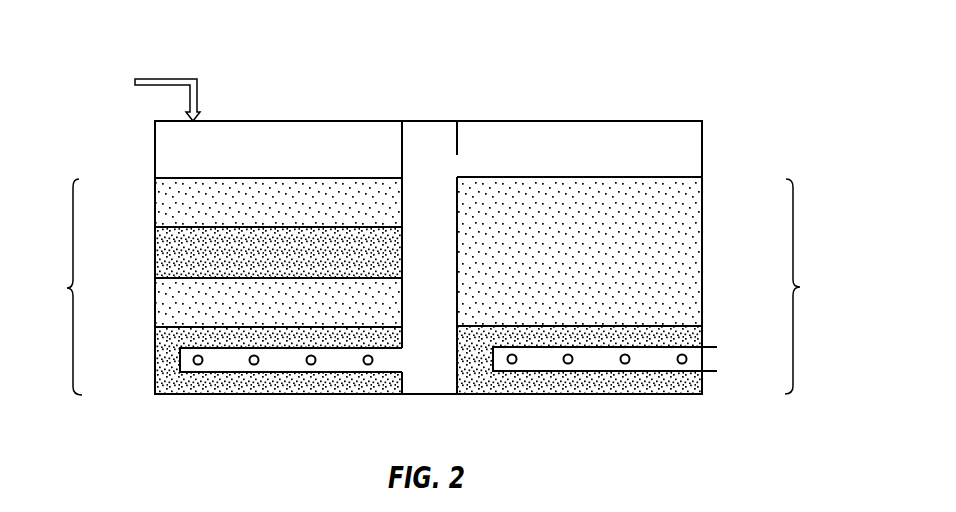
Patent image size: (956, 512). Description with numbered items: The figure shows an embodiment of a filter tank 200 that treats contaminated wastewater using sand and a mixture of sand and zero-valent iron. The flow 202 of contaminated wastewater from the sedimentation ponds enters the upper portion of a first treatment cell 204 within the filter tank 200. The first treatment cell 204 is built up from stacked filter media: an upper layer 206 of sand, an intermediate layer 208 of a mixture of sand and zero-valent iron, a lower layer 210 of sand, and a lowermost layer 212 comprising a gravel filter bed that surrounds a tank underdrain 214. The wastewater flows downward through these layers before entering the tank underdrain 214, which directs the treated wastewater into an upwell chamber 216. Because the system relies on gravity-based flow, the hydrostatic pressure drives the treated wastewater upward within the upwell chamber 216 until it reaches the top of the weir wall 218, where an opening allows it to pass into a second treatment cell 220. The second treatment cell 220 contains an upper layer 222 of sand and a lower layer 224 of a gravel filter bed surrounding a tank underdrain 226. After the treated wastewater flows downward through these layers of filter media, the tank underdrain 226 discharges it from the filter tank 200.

The filter tank 200 is at (625, 72).
The flow 202 is at (162, 79).
The first treatment cell 204 is at (53, 287).
The upper layer 206 is at (155, 205).
The intermediate layer 208 is at (155, 252).
The lower layer 210 is at (155, 300).
The lowermost layer 212 is at (155, 360).
The tank underdrain 214 is at (284, 362).
The upwell chamber 216 is at (430, 380).
The weir wall 218 is at (457, 165).
The second treatment cell 220 is at (815, 286).
The upper layer 222 is at (703, 251).
The lower layer 224 is at (703, 336).
The tank underdrain 226 is at (717, 361).